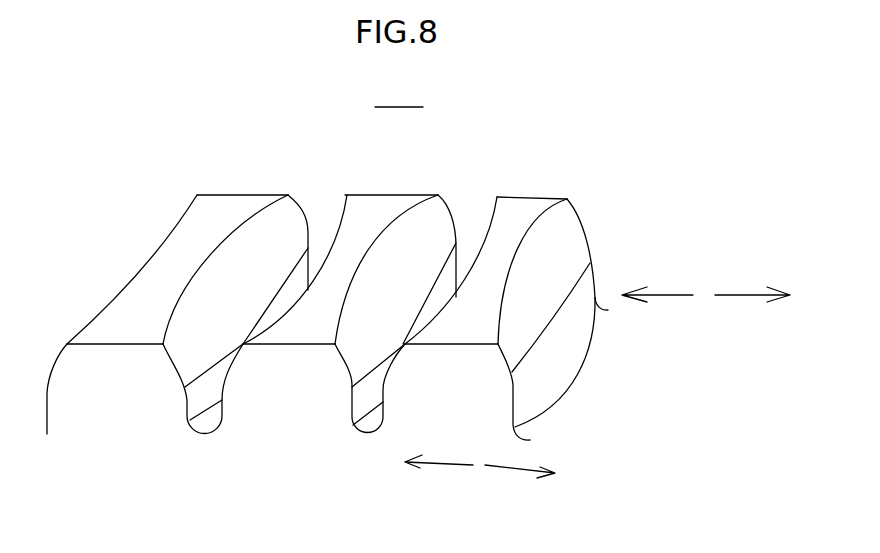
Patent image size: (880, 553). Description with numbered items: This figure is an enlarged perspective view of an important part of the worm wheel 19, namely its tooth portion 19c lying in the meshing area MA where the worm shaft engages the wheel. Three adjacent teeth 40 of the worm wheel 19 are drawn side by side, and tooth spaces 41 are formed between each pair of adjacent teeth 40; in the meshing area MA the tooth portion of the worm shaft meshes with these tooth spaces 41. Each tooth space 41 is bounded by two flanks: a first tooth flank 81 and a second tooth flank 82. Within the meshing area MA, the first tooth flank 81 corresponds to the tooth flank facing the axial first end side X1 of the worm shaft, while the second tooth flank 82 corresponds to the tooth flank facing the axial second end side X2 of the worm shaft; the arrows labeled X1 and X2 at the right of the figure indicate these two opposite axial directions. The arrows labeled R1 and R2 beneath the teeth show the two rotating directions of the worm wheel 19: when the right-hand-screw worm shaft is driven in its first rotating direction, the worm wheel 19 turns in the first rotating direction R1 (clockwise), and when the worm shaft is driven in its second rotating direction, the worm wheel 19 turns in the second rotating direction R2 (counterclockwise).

The worm wheel 19 is at (231, 130).
The tooth portion 19c is at (215, 180).
The teeth 40 is at (242, 207).
The tooth spaces 41 is at (205, 430).
The first tooth flank 81 is at (340, 227).
The second tooth flank 82 is at (222, 307).
The meshing area MA is at (399, 92).
The axial first end side X1 is at (742, 297).
The axial second end side X2 is at (665, 297).
The first rotating direction R1 is at (513, 473).
The second rotating direction R2 is at (440, 466).